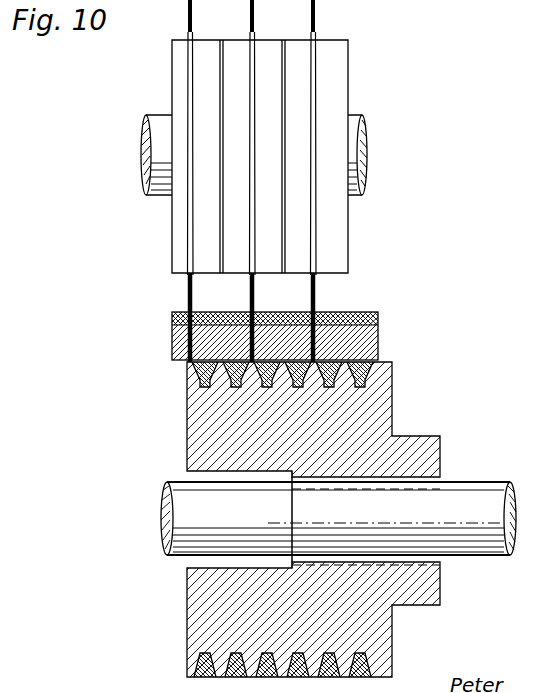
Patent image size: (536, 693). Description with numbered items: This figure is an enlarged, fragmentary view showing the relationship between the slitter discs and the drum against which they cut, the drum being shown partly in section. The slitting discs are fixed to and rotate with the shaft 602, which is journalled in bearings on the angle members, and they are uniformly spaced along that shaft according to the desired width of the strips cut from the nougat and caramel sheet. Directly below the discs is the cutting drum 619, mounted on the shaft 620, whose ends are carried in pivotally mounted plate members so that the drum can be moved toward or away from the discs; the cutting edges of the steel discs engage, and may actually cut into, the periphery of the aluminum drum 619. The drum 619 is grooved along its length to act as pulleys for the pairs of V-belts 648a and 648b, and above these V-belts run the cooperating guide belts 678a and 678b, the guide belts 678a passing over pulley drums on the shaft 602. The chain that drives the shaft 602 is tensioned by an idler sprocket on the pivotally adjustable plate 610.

The shaft 602 is at (358, 132).
The plate 610 is at (313, 22).
The guide belts 678a is at (302, 268).
The guide belts 678b is at (237, 268).
The cutting drum 619 is at (390, 411).
The V-belts 648a is at (297, 388).
The V-belts 648b is at (197, 386).
The shaft 620 is at (478, 490).